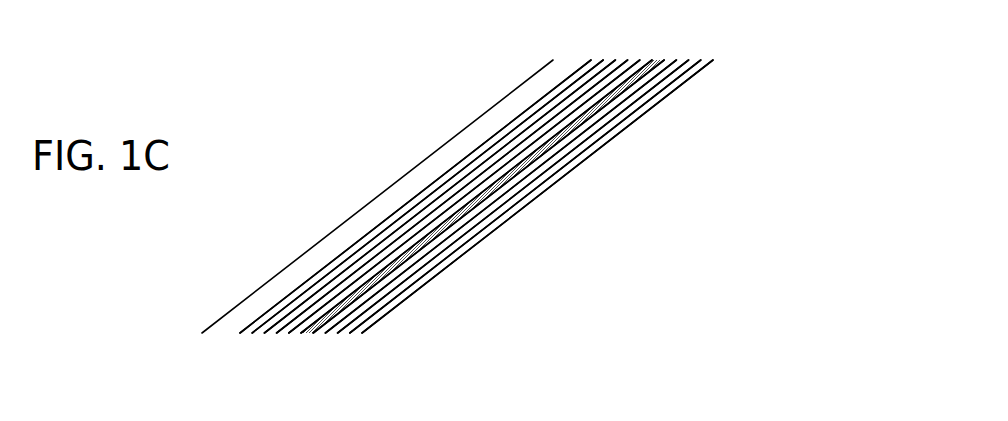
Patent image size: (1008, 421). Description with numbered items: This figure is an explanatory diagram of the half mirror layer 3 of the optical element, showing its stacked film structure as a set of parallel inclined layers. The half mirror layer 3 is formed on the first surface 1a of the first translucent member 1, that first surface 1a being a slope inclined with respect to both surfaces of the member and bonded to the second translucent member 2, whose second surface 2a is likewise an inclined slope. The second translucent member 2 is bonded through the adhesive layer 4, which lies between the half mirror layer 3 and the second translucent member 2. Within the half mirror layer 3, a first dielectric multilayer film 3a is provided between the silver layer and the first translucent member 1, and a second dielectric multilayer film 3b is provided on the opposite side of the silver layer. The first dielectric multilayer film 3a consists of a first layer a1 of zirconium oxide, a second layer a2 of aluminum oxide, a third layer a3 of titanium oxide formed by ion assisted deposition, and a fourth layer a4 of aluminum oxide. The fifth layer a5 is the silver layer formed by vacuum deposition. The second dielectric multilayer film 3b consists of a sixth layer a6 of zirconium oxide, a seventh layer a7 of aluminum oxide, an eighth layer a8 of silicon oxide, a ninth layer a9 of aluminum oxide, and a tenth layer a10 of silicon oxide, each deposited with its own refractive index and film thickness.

The first translucent member 1 is at (832, 284).
The first surface 1a is at (711, 62).
The second translucent member 2 is at (337, 160).
The second surface 2a is at (462, 130).
The half mirror layer 3 is at (365, 337).
The first dielectric multilayer film 3a is at (858, 79).
The second dielectric multilayer film 3b is at (613, 248).
The adhesive layer 4 is at (515, 102).
The first layer a1 is at (682, 80).
The second layer a2 is at (643, 103).
The third layer a3 is at (597, 123).
The fourth layer a4 is at (555, 152).
The fifth layer a5 is at (513, 178).
The sixth layer a6 is at (455, 197).
The seventh layer a7 is at (418, 230).
The eighth layer a8 is at (378, 248).
The ninth layer a9 is at (345, 263).
The tenth layer a10 is at (315, 277).